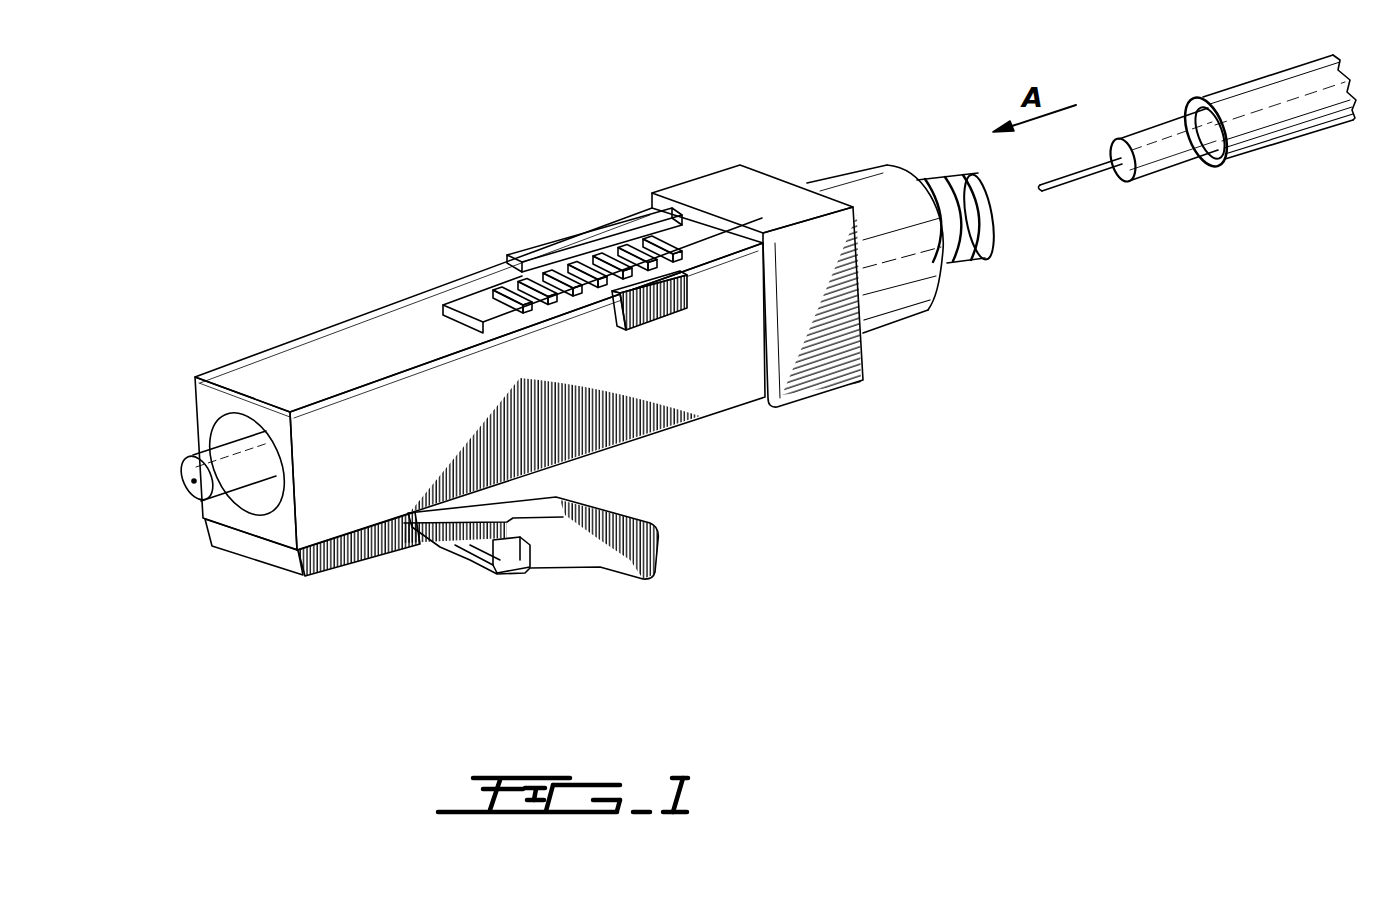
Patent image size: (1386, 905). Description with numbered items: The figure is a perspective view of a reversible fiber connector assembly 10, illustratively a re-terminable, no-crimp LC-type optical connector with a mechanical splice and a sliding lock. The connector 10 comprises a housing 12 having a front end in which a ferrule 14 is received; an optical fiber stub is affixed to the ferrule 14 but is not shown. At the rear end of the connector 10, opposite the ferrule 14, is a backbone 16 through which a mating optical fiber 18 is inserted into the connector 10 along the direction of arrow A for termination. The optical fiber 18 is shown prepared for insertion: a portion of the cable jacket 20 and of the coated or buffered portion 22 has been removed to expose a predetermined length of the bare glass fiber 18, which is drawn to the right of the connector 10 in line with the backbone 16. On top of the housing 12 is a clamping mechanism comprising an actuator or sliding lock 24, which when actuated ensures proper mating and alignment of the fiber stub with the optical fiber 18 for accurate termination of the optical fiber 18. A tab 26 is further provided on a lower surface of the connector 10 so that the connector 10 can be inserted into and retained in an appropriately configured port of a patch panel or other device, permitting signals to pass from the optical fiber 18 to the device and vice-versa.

The reversible fiber connector assembly 10 is at (587, 391).
The housing 12 is at (327, 363).
The ferrule 14 is at (221, 472).
The backbone 16 is at (897, 292).
The optical fiber 18 is at (1057, 184).
The cable jacket 20 is at (1300, 111).
The coated or buffered portion 22 is at (1170, 150).
The sliding lock 24 is at (588, 247).
The tab 26 is at (570, 548).